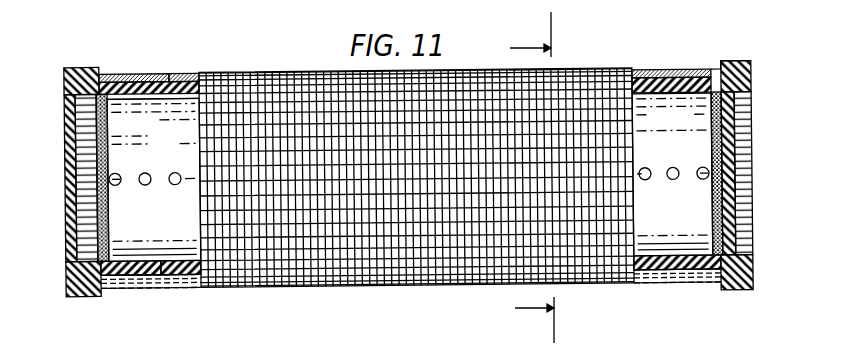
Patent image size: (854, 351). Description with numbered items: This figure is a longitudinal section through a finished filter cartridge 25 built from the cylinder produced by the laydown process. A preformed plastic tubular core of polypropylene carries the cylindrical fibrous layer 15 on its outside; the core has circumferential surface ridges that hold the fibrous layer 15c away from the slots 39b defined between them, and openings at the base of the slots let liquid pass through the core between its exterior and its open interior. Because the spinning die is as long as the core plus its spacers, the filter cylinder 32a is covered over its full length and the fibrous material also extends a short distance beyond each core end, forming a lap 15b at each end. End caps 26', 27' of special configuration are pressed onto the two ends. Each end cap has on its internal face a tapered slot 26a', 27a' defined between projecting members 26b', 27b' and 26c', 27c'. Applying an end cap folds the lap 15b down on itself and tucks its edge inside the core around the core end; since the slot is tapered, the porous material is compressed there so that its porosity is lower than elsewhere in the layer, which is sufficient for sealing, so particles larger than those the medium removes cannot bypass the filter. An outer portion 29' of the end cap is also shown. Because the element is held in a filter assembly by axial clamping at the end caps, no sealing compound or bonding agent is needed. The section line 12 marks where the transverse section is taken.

The section line 12- 12 is at (532, 180).
The filter screen 15 is at (147, 69).
The lap 15b is at (732, 68).
The fibrous layer 15c is at (173, 70).
The end cap band 25 is at (665, 74).
The end cap 26' is at (760, 170).
The tapered slot 26a' is at (766, 172).
The projecting member 26b' is at (683, 56).
The projecting member 26c' is at (687, 174).
The end cap 27' is at (57, 191).
The tapered slot 27a' is at (62, 60).
The projecting member 27b' is at (142, 57).
The projecting member 27c' is at (148, 177).
The end cap fitting 29' is at (767, 173).
The filter cylinder 32a is at (243, 62).
The slots 39b is at (177, 284).